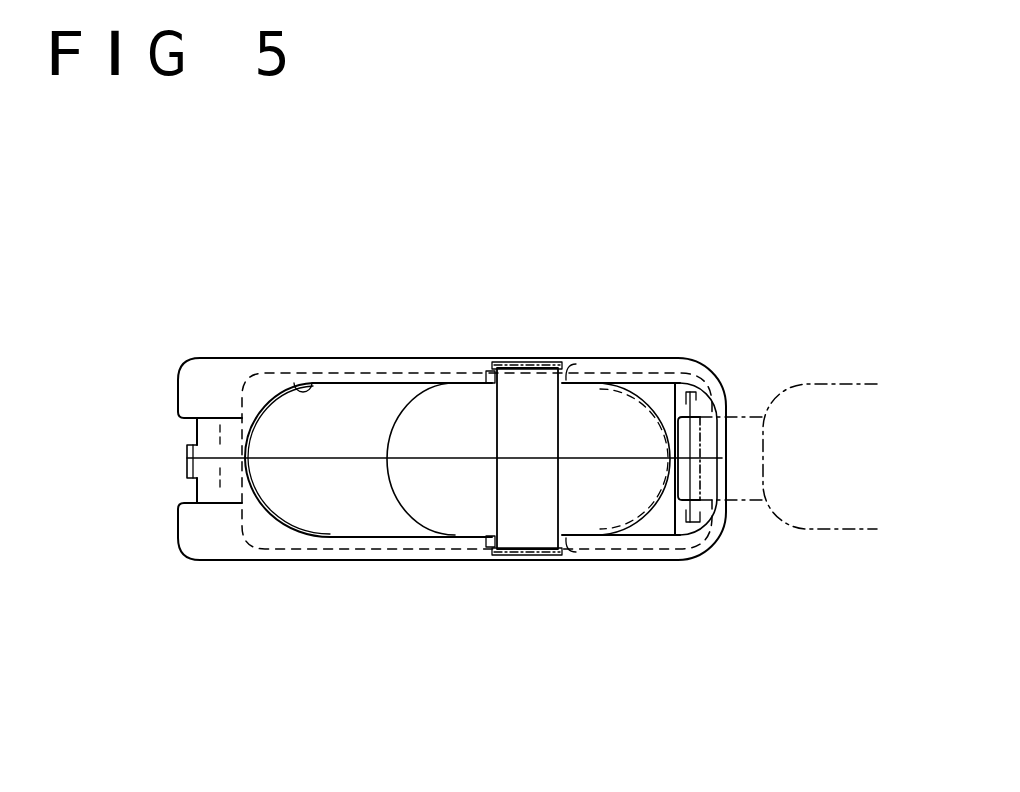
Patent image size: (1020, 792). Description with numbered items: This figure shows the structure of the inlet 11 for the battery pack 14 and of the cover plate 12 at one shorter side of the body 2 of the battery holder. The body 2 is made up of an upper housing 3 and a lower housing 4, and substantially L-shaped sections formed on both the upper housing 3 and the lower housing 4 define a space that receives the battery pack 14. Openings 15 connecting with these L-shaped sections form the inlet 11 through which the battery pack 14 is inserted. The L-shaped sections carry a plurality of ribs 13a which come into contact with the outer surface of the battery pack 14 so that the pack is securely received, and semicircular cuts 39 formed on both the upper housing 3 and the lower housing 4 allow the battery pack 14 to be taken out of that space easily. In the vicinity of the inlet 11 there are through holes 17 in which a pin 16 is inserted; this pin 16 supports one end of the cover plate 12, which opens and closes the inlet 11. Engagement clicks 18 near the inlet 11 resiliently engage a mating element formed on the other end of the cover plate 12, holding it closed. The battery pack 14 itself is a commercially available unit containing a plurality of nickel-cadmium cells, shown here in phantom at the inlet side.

The body 2 is at (556, 359).
The upper housing 3 is at (229, 358).
The lower housing 4 is at (228, 564).
The inlet 11 is at (359, 410).
The cover plate 12 is at (827, 397).
The ribs 13a is at (428, 383).
The battery pack 14 is at (316, 383).
The openings 15 is at (627, 385).
The pin 16 is at (695, 437).
The through holes 17 is at (703, 366).
The engagement clicks 18 is at (186, 446).
The semicircular cuts 39 is at (498, 362).